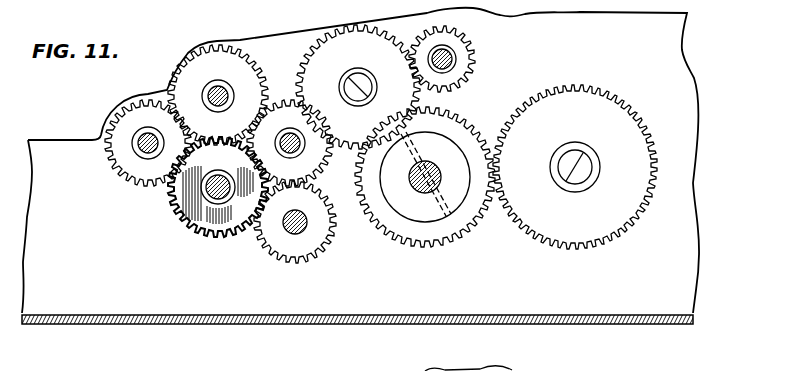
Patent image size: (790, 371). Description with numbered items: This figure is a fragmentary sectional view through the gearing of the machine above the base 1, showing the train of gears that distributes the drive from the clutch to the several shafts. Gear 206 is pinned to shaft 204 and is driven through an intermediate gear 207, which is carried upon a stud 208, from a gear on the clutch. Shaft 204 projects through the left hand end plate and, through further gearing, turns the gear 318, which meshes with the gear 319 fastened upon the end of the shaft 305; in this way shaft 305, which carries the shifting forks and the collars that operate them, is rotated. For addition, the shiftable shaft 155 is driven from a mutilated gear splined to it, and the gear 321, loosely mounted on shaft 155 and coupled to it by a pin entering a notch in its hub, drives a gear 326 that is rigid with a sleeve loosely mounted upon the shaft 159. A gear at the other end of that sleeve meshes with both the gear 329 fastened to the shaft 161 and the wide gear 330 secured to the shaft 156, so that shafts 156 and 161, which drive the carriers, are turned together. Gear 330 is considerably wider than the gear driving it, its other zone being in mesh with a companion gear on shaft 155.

The base 1 is at (340, 316).
The shaft 161 is at (138, 148).
The gear 329 is at (137, 163).
The shaft 305 is at (218, 88).
The gear 319 is at (247, 72).
The shaft 156 is at (358, 87).
The gear 330 is at (329, 127).
The gear 318 is at (175, 216).
The shaft 159 is at (200, 237).
The gear 326 is at (212, 238).
The gear 321 is at (317, 207).
The shaft 155 is at (307, 228).
The shaft 204 is at (430, 172).
The gear 206 is at (460, 133).
The intermediate gear 207 is at (575, 167).
The stud 208 is at (592, 178).